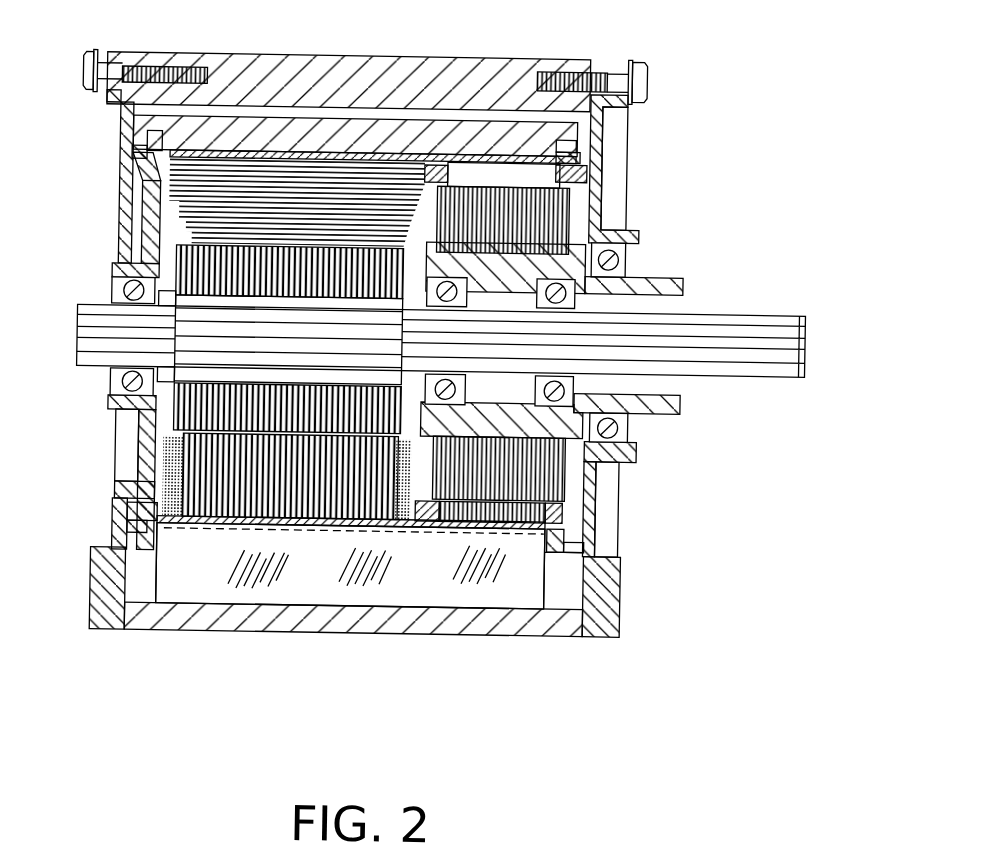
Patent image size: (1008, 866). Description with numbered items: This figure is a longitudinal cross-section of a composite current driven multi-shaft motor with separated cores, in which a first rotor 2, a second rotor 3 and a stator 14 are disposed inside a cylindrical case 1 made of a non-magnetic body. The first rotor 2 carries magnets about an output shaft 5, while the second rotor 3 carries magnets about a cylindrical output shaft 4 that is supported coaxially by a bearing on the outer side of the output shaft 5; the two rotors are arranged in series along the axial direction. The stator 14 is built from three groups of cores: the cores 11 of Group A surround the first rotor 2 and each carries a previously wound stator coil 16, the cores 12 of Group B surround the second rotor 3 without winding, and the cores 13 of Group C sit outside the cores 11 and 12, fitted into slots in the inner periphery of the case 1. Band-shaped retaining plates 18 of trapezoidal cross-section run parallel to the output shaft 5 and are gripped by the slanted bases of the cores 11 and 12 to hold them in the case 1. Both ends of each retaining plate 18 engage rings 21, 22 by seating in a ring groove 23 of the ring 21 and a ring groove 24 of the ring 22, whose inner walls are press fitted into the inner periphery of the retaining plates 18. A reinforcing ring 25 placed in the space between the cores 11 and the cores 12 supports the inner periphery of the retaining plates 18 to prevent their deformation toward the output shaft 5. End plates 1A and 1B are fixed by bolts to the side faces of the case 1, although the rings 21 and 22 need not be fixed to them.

The case 1 is at (372, 616).
The end plate 1A is at (604, 122).
The end plate 1B is at (138, 452).
The first rotor 2 is at (172, 267).
The second rotor 3 is at (568, 466).
The output shaft 4 is at (655, 268).
The output shaft 5 is at (721, 303).
The core 11 is at (311, 517).
The core 12 is at (499, 522).
The core 13 is at (207, 584).
The stator 14 is at (350, 566).
The stator coil 16 is at (372, 184).
The retaining plate 18 is at (237, 151).
The ring 21 is at (554, 138).
The ring 22 is at (140, 143).
The ring groove 23 is at (570, 155).
The ring groove 24 is at (129, 168).
The reinforcing ring 25 is at (432, 155).